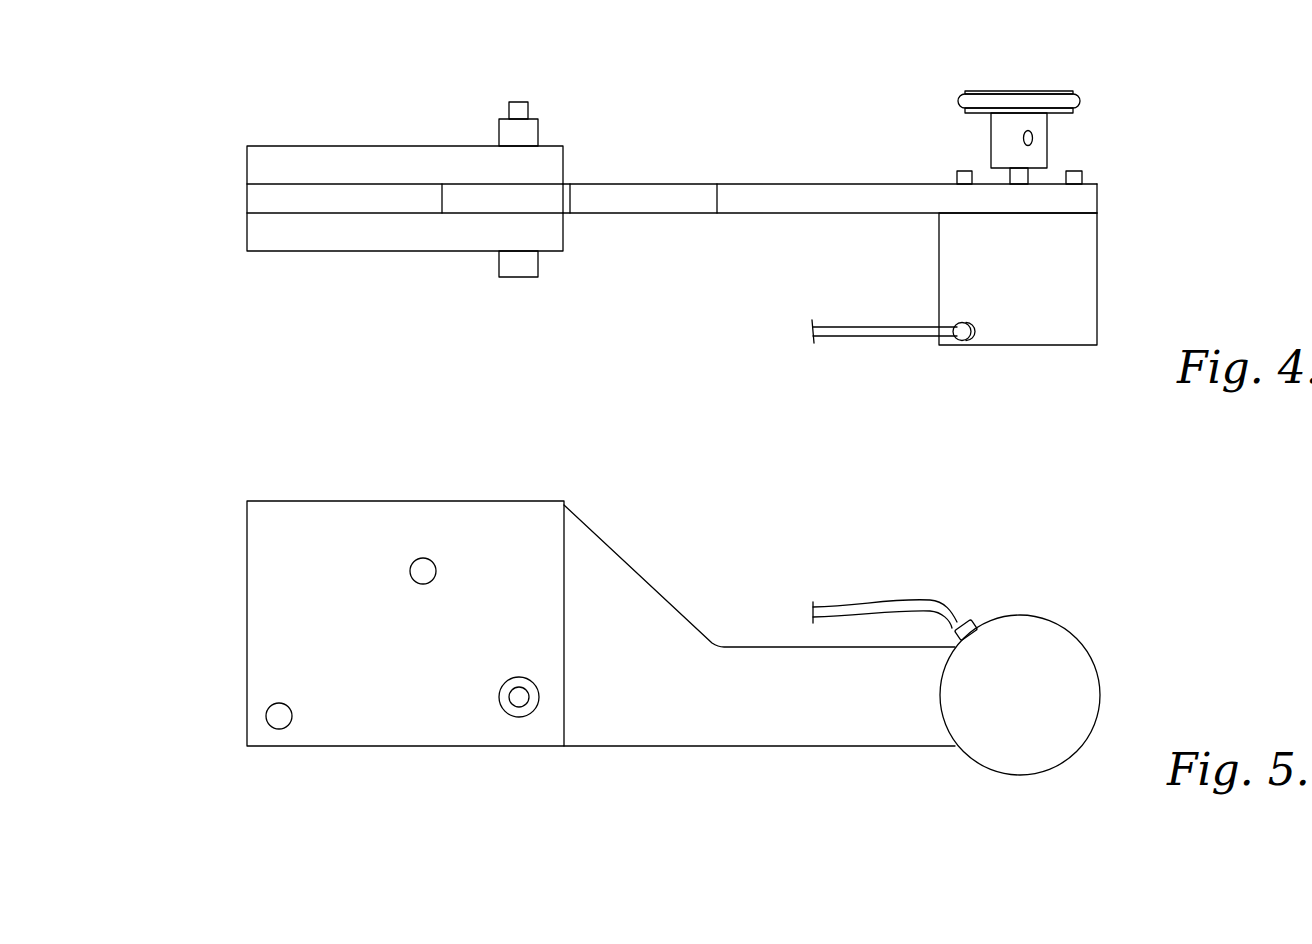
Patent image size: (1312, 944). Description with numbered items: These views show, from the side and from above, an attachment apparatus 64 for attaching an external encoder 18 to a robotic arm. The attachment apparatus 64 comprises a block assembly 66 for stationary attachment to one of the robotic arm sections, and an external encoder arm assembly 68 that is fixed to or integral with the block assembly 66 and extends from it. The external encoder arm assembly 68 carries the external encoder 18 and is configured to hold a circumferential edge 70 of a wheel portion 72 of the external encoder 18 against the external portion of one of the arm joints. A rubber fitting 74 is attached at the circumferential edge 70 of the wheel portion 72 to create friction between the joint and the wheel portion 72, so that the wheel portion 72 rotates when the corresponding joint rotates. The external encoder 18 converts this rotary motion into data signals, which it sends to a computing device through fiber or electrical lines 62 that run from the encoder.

In FIG. 4, the external encoder 18 is at (1088, 262).
In FIG. 5, the external encoder 18 is at (1092, 684).
In FIG. 4, the fiber or electrical lines 62 is at (873, 331).
In FIG. 5, the fiber or electrical lines 62 is at (890, 600).
In FIG. 4, the attachment apparatus 64 is at (430, 78).
In FIG. 5, the attachment apparatus 64 is at (472, 468).
In FIG. 4, the block assembly 66 is at (282, 146).
In FIG. 5, the block assembly 66 is at (292, 500).
In FIG. 4, the external encoder arm assembly 68 is at (668, 184).
In FIG. 5, the external encoder arm assembly 68 is at (633, 567).
In FIG. 4, the circumferential edge 70 is at (960, 110).
In FIG. 4, the wheel portion 72 is at (997, 91).
In FIG. 4, the rubber fitting 74 is at (1073, 101).